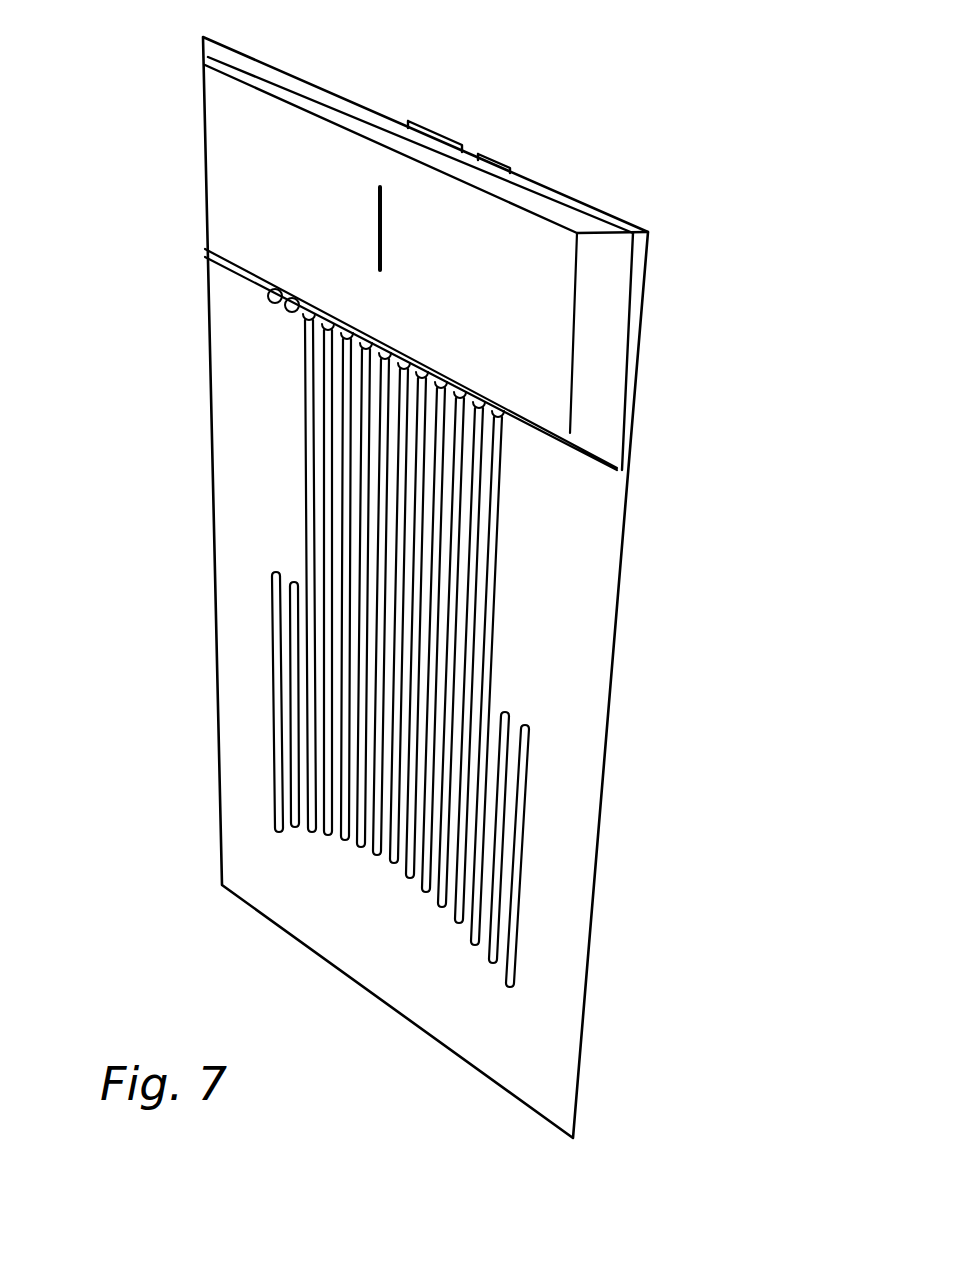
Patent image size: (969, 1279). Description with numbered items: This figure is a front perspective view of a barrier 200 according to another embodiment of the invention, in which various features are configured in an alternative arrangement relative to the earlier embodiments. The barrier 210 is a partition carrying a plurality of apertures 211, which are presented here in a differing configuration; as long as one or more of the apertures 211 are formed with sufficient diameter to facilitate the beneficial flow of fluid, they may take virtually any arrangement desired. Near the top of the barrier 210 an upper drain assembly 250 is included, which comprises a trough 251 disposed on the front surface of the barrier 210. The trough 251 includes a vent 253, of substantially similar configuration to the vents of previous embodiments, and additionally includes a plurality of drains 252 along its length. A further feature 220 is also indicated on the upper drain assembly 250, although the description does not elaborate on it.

The barrier 200 is at (786, 108).
The barrier 210 is at (596, 650).
The apertures 211 is at (265, 702).
The clips 220 is at (518, 160).
The upper drain assembly 250 is at (590, 200).
The trough 251 is at (268, 80).
The drains 252 is at (527, 445).
The vent 253 is at (376, 218).